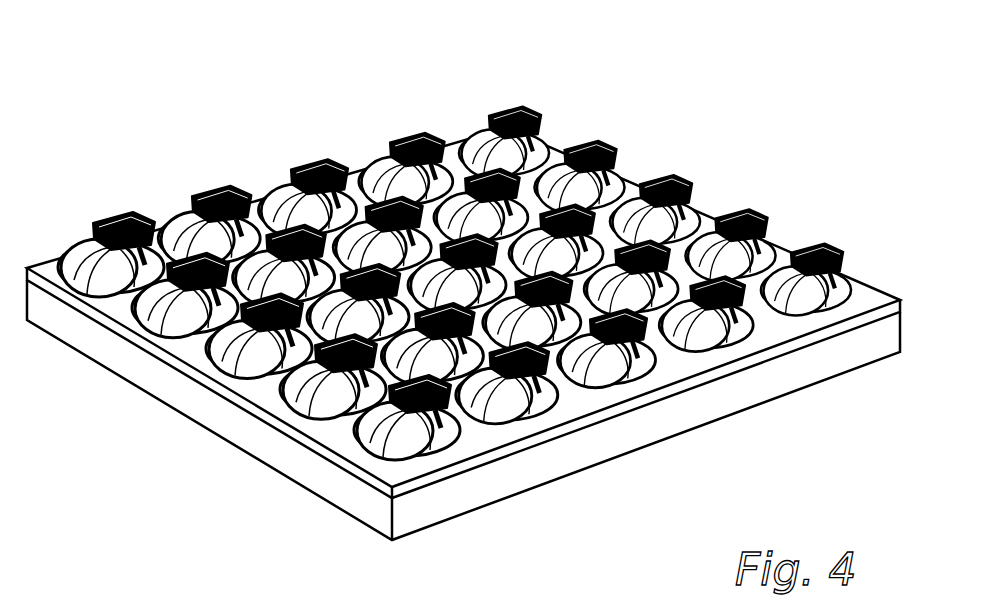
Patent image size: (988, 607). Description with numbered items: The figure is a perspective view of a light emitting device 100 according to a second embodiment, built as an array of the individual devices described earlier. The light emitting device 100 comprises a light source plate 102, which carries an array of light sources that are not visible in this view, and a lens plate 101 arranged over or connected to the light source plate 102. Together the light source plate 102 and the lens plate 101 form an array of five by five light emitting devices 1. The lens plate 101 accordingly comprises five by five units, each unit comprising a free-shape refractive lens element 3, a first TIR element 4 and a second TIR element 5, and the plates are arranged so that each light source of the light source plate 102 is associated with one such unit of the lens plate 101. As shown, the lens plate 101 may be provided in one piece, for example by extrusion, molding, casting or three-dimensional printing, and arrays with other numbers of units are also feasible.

The light emitting device 100 is at (311, 106).
The lens plate 101 is at (337, 435).
The light source plate 102 is at (502, 476).
The light emitting device 1 is at (117, 310).
The free-shape refractive lens element 3 is at (107, 280).
The first TIR element 4 is at (108, 240).
The second TIR element 5 is at (127, 223).